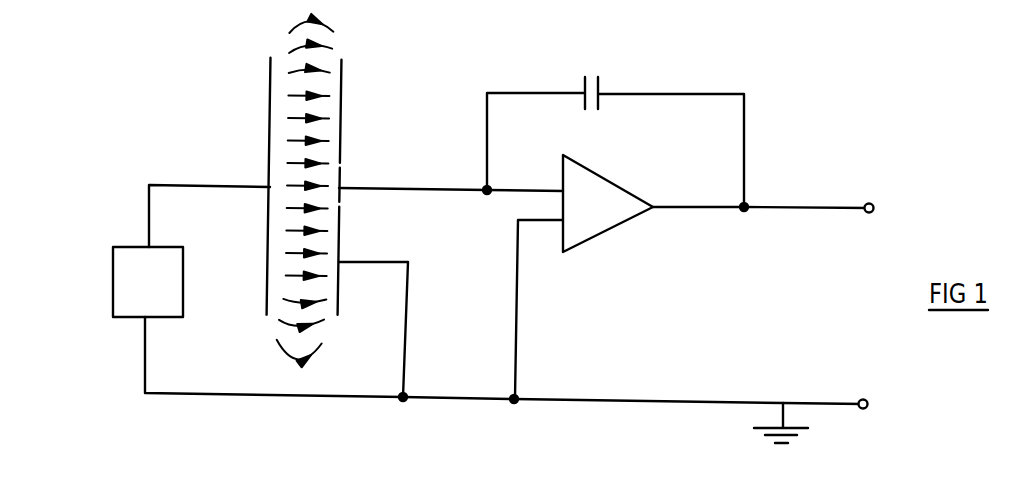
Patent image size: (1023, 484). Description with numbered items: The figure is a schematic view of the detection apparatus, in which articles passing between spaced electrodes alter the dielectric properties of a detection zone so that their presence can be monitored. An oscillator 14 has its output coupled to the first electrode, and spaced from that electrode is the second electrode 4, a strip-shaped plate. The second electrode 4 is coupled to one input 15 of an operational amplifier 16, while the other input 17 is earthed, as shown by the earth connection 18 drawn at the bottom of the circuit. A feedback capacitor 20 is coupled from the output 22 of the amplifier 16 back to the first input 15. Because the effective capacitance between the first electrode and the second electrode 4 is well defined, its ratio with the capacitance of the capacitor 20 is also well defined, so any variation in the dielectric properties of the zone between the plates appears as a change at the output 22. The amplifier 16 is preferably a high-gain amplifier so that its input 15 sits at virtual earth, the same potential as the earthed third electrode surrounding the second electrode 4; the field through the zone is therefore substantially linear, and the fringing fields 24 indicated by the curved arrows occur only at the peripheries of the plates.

The second electrode 4 is at (341, 170).
The oscillator 14 is at (164, 246).
The input 15 is at (529, 189).
The operational amplifier 16 is at (612, 218).
The other input 17 is at (542, 221).
The ground connection conductor 18 is at (404, 346).
The feedback capacitor 20 is at (600, 92).
The output 22 is at (800, 209).
The fringing fields 24 is at (312, 23).